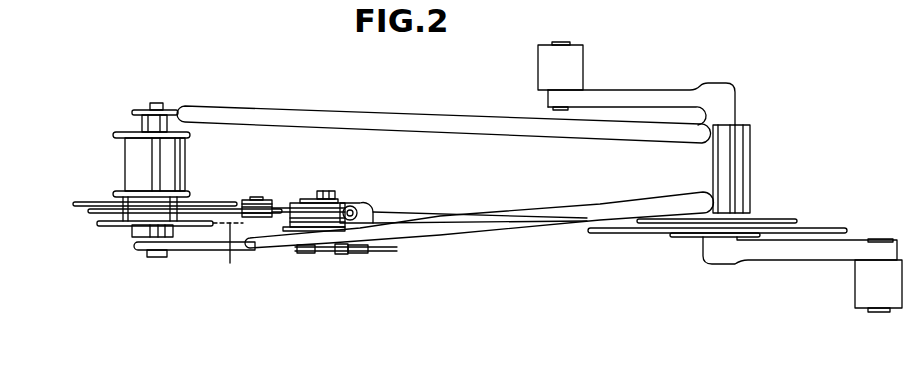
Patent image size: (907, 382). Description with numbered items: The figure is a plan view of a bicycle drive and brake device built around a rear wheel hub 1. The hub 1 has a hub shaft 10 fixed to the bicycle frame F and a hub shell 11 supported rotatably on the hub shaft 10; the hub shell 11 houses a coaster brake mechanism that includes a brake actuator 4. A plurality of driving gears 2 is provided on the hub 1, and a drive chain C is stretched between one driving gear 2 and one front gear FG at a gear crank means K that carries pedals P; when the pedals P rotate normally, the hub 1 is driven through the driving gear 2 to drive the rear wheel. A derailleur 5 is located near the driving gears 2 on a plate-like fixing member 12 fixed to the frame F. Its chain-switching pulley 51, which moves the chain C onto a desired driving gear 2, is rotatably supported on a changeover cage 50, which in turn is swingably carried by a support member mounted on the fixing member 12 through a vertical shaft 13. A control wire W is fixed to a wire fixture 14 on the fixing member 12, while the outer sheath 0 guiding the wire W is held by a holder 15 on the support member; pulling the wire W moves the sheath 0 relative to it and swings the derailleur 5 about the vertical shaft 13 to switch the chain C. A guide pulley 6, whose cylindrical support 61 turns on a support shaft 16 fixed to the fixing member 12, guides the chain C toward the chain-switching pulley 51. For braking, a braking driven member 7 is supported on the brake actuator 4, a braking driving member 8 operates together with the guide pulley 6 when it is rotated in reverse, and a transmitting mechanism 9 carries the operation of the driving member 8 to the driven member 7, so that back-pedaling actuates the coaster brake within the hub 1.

The rear wheel hub 1 is at (125, 155).
The driving gears 2 is at (217, 209).
The brake actuator 4 is at (132, 228).
The derailleur 5 is at (272, 200).
The guide pulley 6 is at (295, 205).
The braking driven member 7 is at (198, 227).
The braking driving member 8 is at (295, 232).
The transmitting mechanism 9 is at (229, 256).
The hub shaft 10 is at (158, 103).
The hub shell 11 is at (130, 172).
The fixing member 12 is at (183, 251).
The vertical shaft 13 is at (358, 205).
The wire fixture 14 is at (302, 253).
The holder 15 is at (340, 254).
The support shaft 16 is at (335, 200).
The outer sheath 0 is at (363, 253).
The changeover cage 50 is at (273, 230).
The chain-switching pulley 51 is at (248, 200).
The cylindrical support 61 is at (326, 191).
The drive chain C is at (403, 213).
The bicycle frame F is at (450, 232).
The front gears FG is at (654, 233).
The gear crank means K is at (732, 84).
The pedals P is at (575, 67).
The control wire W is at (390, 252).